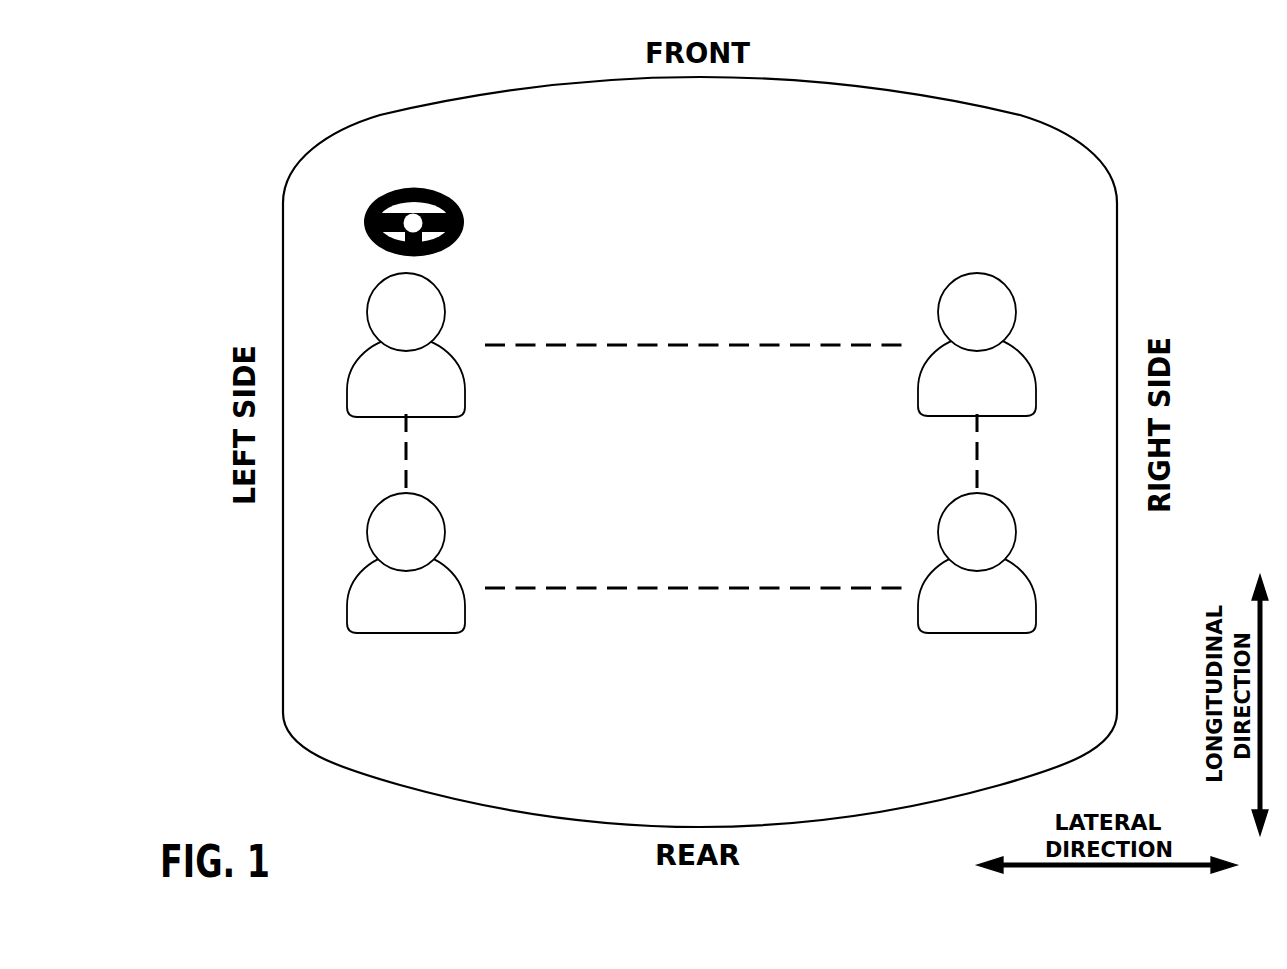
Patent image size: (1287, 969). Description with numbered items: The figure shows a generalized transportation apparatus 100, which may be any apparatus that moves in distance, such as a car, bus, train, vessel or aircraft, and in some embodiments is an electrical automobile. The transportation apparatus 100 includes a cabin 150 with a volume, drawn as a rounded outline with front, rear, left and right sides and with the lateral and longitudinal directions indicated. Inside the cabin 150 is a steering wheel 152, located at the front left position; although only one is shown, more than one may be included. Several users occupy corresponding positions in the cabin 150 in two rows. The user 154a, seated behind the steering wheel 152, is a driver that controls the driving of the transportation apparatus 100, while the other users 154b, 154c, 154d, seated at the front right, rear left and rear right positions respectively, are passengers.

The transportation apparatus 100 is at (1003, 118).
The cabin 150 is at (720, 120).
The steering wheel 152 is at (463, 223).
The user 154a is at (442, 300).
The user 154b is at (1012, 293).
The user 154c is at (442, 517).
The user 154d is at (1015, 515).